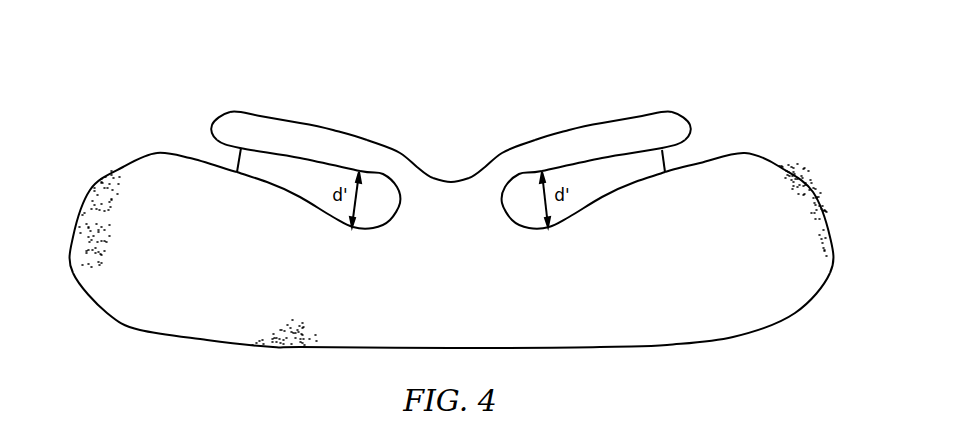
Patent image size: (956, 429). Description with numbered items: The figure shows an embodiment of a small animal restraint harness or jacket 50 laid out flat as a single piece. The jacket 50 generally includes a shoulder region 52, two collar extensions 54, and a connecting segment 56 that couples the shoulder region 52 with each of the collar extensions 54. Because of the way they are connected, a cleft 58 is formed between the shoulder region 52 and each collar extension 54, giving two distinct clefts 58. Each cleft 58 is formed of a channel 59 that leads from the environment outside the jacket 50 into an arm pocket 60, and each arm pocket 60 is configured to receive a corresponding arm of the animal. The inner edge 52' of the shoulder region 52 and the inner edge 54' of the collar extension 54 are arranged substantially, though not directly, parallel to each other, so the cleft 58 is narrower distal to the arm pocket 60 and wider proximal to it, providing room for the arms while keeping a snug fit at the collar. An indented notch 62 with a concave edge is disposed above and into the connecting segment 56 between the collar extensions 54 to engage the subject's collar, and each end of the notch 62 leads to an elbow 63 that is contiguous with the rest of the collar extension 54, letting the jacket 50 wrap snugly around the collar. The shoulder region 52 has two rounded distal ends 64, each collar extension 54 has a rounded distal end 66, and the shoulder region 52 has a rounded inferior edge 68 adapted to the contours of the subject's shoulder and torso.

The animal restraint harness or jacket 50 is at (188, 41).
The shoulder region 52 is at (451, 250).
The inner edge of shoulder region 52' is at (438, 199).
The collar extensions 54 is at (451, 127).
The inner edge of collar extension 54' is at (451, 128).
The connecting segment 56 is at (439, 219).
The cleft 58 is at (222, 156).
The channel 59 is at (254, 174).
The arm pocket 60 is at (367, 214).
The indented notch 62 is at (452, 174).
The elbow 63 is at (394, 150).
The distal ends of shoulder region 64 is at (85, 193).
The distal end of collar extension 66 is at (213, 126).
The inferior edge 68 is at (523, 347).